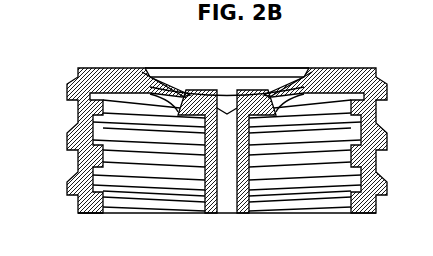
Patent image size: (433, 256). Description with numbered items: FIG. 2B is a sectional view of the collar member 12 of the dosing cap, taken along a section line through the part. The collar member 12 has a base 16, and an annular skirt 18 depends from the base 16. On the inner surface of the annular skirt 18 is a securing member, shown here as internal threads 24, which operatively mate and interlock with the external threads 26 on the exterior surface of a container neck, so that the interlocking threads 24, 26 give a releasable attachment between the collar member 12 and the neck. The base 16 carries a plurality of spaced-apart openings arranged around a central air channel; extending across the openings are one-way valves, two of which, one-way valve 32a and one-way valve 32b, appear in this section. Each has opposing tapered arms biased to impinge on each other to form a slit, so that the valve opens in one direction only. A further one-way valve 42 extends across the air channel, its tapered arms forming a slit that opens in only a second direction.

The collar member 12 is at (350, 34).
The base 16 is at (377, 69).
The annular skirt 18 is at (77, 206).
The internal threads 24 is at (67, 183).
The external threads 26 is at (103, 138).
The one-way valve 32a is at (287, 78).
The one-way valve 32b is at (168, 77).
The one-way valve 42 is at (230, 94).